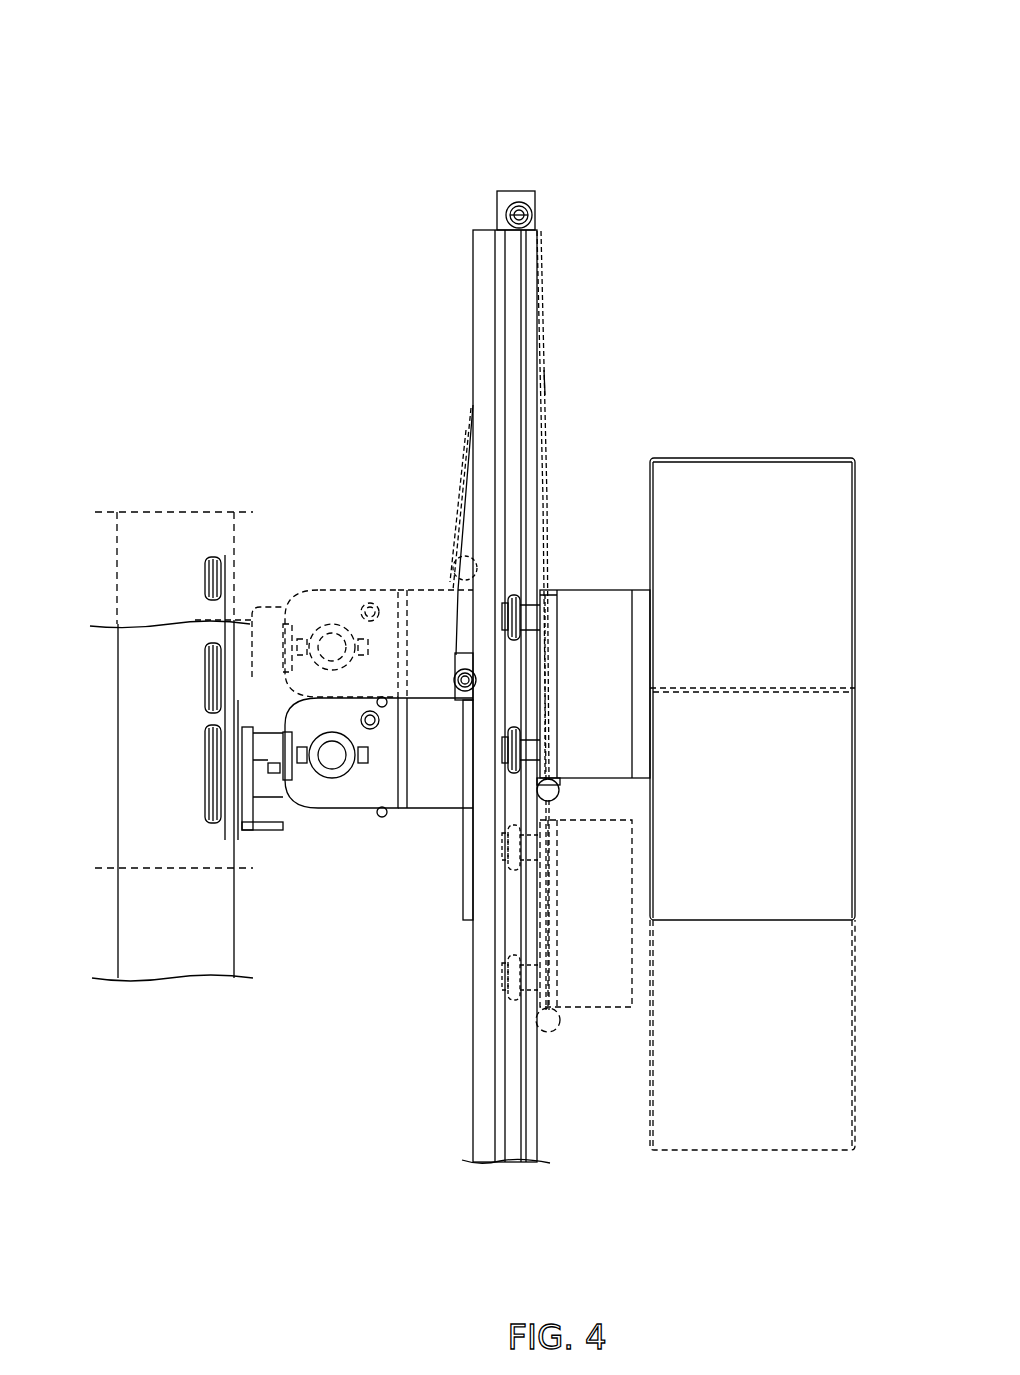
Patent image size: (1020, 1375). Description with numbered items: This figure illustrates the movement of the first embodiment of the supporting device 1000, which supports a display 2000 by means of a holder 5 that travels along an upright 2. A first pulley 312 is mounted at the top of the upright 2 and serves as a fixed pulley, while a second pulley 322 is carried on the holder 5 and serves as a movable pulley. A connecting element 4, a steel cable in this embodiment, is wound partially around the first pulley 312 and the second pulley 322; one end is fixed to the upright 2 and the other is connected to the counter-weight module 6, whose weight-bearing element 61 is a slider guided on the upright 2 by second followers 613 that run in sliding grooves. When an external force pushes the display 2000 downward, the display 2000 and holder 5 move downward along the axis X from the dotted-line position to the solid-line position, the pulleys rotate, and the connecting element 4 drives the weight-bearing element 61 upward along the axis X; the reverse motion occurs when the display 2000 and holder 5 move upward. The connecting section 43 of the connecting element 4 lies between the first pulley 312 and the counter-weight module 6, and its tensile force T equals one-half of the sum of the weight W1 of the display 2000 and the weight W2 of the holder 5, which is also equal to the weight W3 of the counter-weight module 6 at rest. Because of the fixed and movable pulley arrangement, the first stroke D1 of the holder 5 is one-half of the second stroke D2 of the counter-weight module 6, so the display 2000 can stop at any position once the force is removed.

The supporting device 1000 is at (421, 80).
The upright 2 is at (483, 257).
The first pulley 312 is at (543, 210).
The connecting section 43 is at (545, 312).
The tensile force T is at (547, 383).
The axis X is at (757, 321).
The connecting element 4 is at (460, 507).
The second pulley 322 is at (448, 572).
The holder 5 is at (309, 578).
The display 2000 is at (187, 523).
The counter-weight module 6 is at (786, 820).
The weight-bearing element 61 is at (605, 612).
The second follower 613 is at (532, 628).
The first stroke D1 is at (60, 516).
The second stroke D2 is at (855, 458).
The weight of the display W1 is at (178, 985).
The weight of the holder W2 is at (405, 820).
The weight of the counter-weight module W3 is at (748, 922).